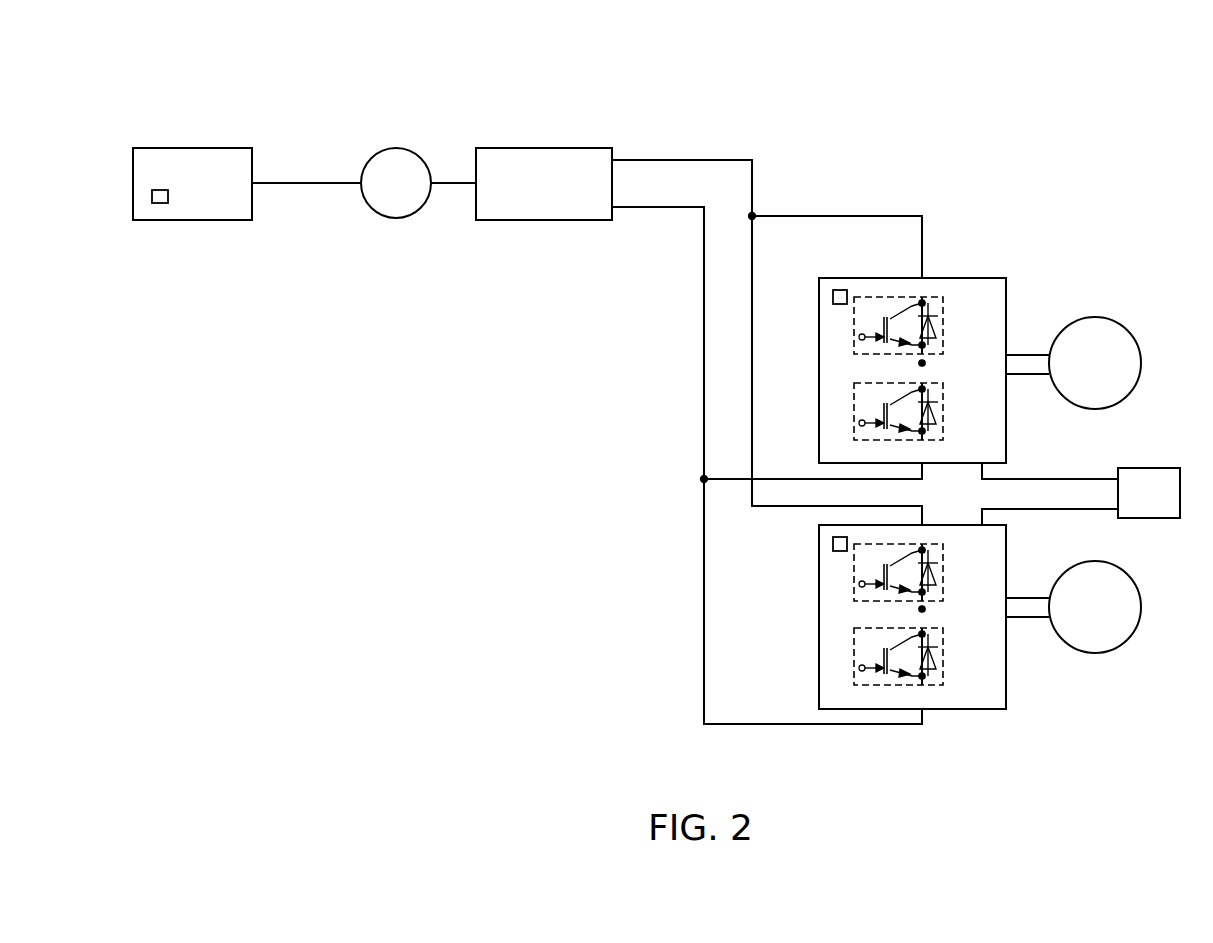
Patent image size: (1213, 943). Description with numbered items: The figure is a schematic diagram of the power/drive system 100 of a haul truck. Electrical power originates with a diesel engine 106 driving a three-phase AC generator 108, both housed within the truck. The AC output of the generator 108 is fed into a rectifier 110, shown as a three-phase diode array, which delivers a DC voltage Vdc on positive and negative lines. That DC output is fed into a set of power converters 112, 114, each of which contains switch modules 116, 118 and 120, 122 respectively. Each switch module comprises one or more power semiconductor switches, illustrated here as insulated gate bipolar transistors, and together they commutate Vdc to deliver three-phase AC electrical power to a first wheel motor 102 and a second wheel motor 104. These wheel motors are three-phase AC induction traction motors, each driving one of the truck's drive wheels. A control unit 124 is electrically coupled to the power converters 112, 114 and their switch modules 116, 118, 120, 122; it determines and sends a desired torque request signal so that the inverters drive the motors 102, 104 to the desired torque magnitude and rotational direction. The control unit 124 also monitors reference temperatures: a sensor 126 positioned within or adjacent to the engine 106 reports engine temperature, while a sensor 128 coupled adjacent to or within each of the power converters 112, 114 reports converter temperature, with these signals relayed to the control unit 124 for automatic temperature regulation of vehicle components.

The power/drive system 100 is at (774, 58).
The first wheel motor 102 is at (1096, 317).
The second wheel motor 104 is at (1093, 654).
The diesel engine 106 is at (190, 148).
The three-phase AC generator 108 is at (393, 148).
The rectifier 110 is at (541, 148).
The power converter 112 is at (963, 278).
The power converter 114 is at (964, 712).
The switch module 116 is at (945, 320).
The switch module 118 is at (945, 420).
The switch module 120 is at (945, 580).
The switch module 122 is at (945, 655).
The control unit 124 is at (1163, 468).
The sensor 126 is at (163, 204).
The sensor 128 is at (840, 290).